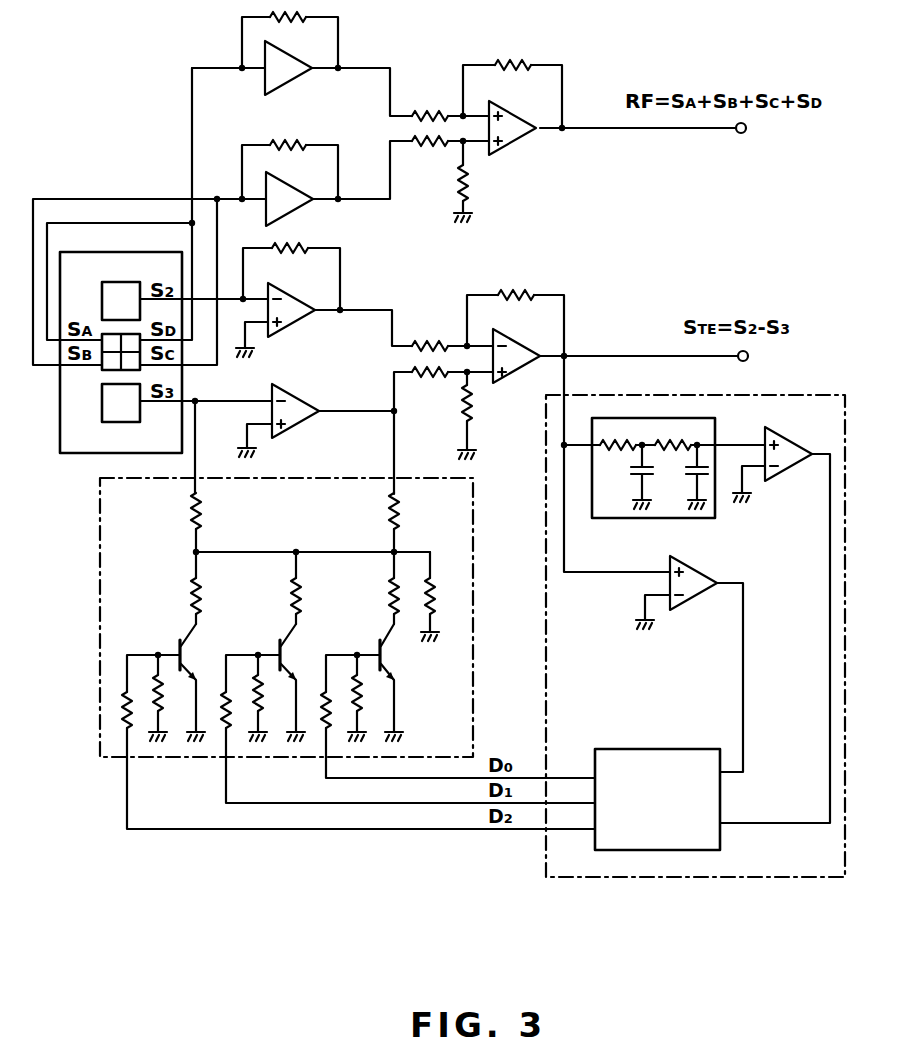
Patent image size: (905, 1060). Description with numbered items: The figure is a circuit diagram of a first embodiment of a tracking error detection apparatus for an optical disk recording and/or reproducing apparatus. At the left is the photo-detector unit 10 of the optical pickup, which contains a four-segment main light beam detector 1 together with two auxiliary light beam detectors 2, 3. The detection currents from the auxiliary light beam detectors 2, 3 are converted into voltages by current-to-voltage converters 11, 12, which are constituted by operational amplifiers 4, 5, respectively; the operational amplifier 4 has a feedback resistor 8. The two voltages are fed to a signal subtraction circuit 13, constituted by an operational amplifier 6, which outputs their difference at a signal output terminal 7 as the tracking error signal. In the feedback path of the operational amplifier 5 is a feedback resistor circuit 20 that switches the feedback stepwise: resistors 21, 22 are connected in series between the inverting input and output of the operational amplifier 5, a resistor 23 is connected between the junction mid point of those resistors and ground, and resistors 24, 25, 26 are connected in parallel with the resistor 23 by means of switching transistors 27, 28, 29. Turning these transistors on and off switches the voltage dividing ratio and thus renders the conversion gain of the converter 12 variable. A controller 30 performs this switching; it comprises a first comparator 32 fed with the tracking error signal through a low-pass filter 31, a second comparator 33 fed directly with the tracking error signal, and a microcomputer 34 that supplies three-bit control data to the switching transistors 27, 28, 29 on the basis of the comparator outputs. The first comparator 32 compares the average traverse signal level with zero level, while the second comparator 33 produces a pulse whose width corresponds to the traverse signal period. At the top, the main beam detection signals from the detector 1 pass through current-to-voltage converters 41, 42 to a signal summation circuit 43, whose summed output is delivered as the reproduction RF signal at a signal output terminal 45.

The main light beam detector 1 is at (100, 369).
The auxiliary light beam detector 2 is at (100, 297).
The auxiliary light beam detector 3 is at (101, 406).
The operational amplifier 4 is at (292, 325).
The operational amplifier 5 is at (296, 398).
The operational amplifier 6 is at (512, 375).
The signal output terminal 7 is at (748, 359).
The feedback resistor 8 is at (292, 248).
The photo-detector unit 10 is at (71, 458).
The current-to-voltage converter 11 is at (334, 287).
The current-to-voltage converter 12 is at (337, 464).
The signal subtraction circuit 13 is at (553, 329).
The feedback resistor circuit 20 is at (100, 760).
The resistor 21 is at (203, 520).
The resistor 22 is at (401, 518).
The resistor 23 is at (431, 592).
The resistor 24 is at (203, 594).
The resistor 25 is at (301, 594).
The resistor 26 is at (393, 590).
The switching transistor 27 is at (180, 645).
The switching transistor 28 is at (280, 645).
The switching transistor 29 is at (372, 645).
The controller 30 is at (665, 878).
The low-pass filter 31 is at (700, 519).
The first comparator 32 is at (785, 477).
The second comparator 33 is at (688, 603).
The microcomputer 34 is at (673, 749).
The current-to-voltage converter 41 is at (331, 54).
The current-to-voltage converter 42 is at (331, 184).
The signal summation circuit 43 is at (545, 104).
The signal output terminal 45 is at (742, 134).